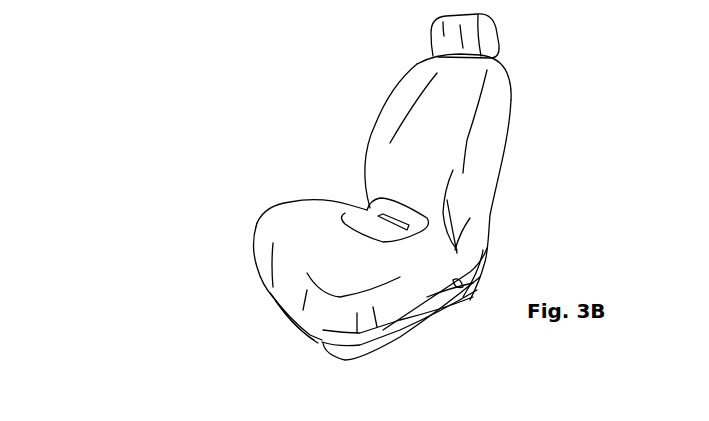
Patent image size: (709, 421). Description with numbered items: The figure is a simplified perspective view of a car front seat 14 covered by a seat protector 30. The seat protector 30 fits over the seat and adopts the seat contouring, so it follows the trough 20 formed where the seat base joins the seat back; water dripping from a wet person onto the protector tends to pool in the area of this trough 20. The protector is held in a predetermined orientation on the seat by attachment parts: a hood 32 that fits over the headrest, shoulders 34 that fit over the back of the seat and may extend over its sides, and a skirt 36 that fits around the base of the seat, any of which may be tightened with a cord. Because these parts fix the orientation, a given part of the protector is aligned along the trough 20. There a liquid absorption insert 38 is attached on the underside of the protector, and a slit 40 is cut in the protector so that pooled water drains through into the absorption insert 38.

The front seat 14 is at (530, 141).
The trough 20 is at (370, 208).
The seat protector 30 is at (238, 207).
The hood 32 is at (430, 33).
The shoulders 34 is at (414, 68).
The skirt 36 is at (280, 298).
The liquid absorption insert 38 is at (370, 220).
The slit 40 is at (397, 220).